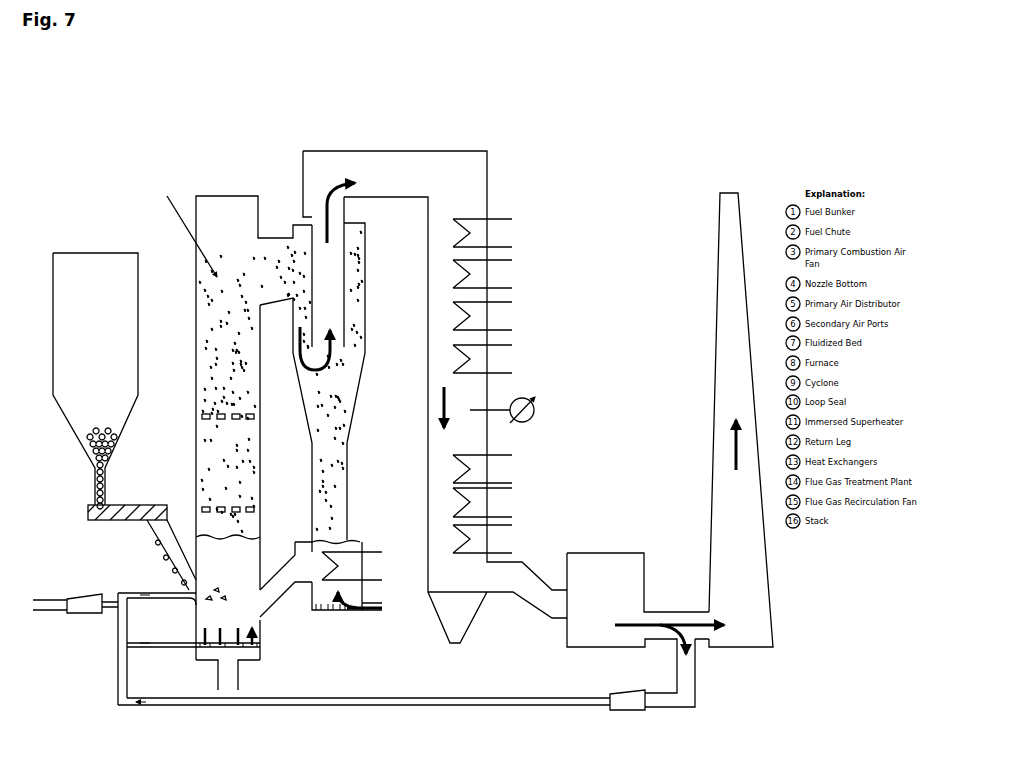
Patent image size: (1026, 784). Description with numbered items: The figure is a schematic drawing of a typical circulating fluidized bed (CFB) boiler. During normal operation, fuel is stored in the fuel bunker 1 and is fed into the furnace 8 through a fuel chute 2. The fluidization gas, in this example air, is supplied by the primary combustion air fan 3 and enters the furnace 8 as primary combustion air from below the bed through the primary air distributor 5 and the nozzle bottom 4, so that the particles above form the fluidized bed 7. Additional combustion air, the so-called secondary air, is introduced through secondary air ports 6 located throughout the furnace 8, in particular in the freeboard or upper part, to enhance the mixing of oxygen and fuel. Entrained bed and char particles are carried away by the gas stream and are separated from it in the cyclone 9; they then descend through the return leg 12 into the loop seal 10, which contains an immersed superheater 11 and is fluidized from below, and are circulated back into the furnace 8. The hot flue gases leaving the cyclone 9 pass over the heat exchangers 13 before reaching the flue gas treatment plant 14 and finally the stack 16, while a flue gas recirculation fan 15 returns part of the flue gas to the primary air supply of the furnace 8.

The fuel bunker 1 is at (95, 381).
The fuel chute 2 is at (156, 533).
The primary combustion air fan 3 is at (75, 599).
The nozzle bottom 4 is at (338, 615).
The primary air distributor 5 is at (157, 649).
The secondary air ports 6 is at (199, 411).
The fluidized bed 7 is at (318, 590).
The furnace 8 is at (228, 221).
The cyclone 9 is at (364, 364).
The loop seal 10 is at (349, 536).
The immersed superheater 11 is at (352, 566).
The return leg 12 is at (280, 565).
The heat exchangers 13 is at (490, 300).
The flue gas treatment plant 14 is at (645, 630).
The flue gas recirculation fan 15 is at (381, 694).
The stack 16 is at (741, 420).